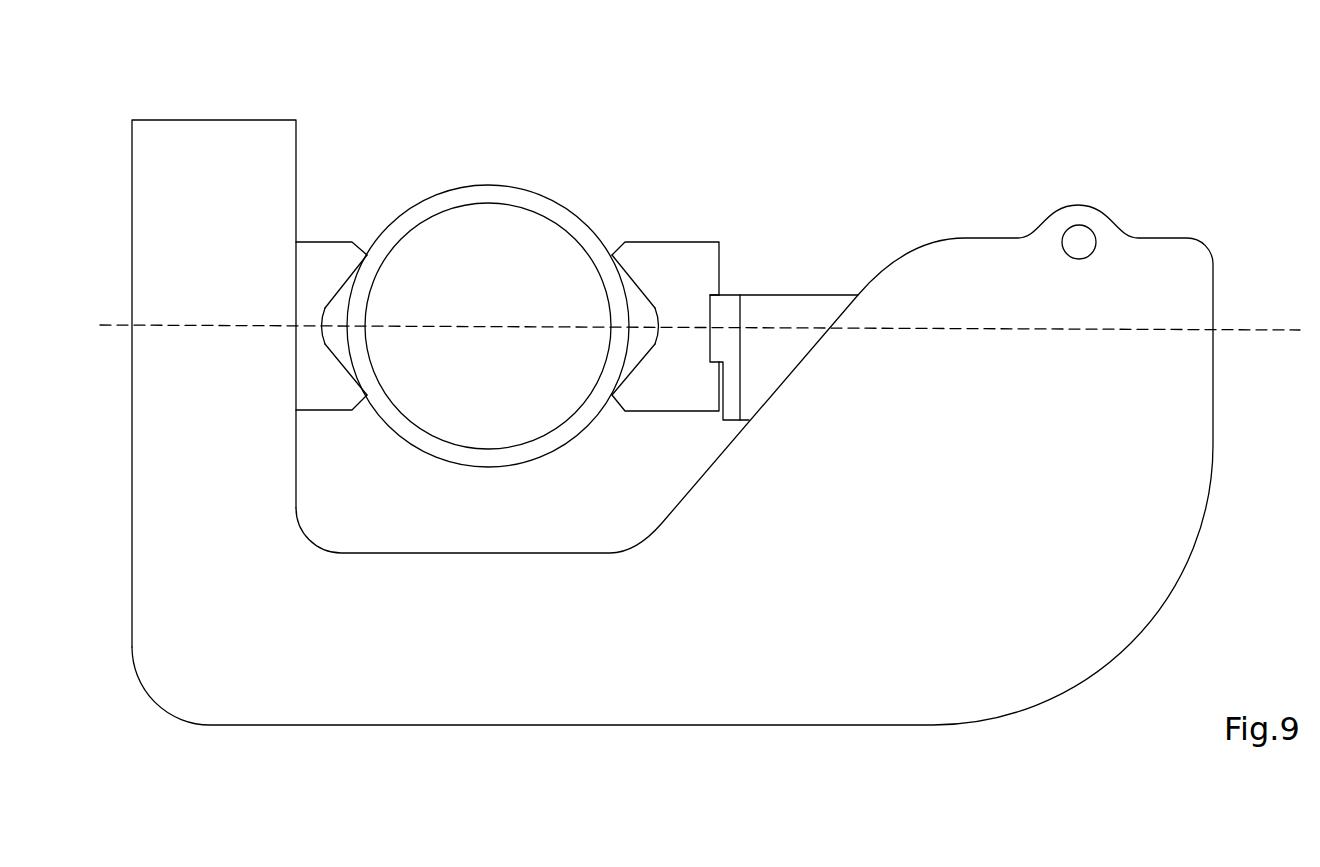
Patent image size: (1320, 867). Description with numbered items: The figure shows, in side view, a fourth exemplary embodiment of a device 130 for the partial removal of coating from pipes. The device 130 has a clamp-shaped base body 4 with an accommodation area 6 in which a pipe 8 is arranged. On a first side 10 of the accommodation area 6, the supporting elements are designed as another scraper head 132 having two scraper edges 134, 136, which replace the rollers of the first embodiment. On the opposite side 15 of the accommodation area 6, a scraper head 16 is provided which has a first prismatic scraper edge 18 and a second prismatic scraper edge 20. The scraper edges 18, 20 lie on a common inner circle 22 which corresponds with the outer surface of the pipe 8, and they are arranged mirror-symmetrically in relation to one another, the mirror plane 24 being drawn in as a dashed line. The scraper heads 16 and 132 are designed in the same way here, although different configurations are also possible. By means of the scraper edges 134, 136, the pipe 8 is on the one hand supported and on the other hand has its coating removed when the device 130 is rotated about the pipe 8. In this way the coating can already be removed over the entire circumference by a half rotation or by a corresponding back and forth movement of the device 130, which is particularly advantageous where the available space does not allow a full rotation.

The base body 4 is at (1177, 542).
The accommodation area 6 is at (496, 251).
The pipe 8 is at (454, 193).
The first side 10 is at (296, 138).
The opposite side 15 is at (857, 285).
The scraper head 16 is at (658, 326).
The first prismatic scraper edge 18 is at (609, 252).
The second prismatic scraper edge 20 is at (607, 400).
The inner circle 22 is at (524, 181).
The mirror plane 24 is at (1270, 328).
The device 130 is at (964, 83).
The scraper head 132 is at (343, 325).
The scraper edge 134 is at (365, 252).
The scraper edge 136 is at (367, 400).